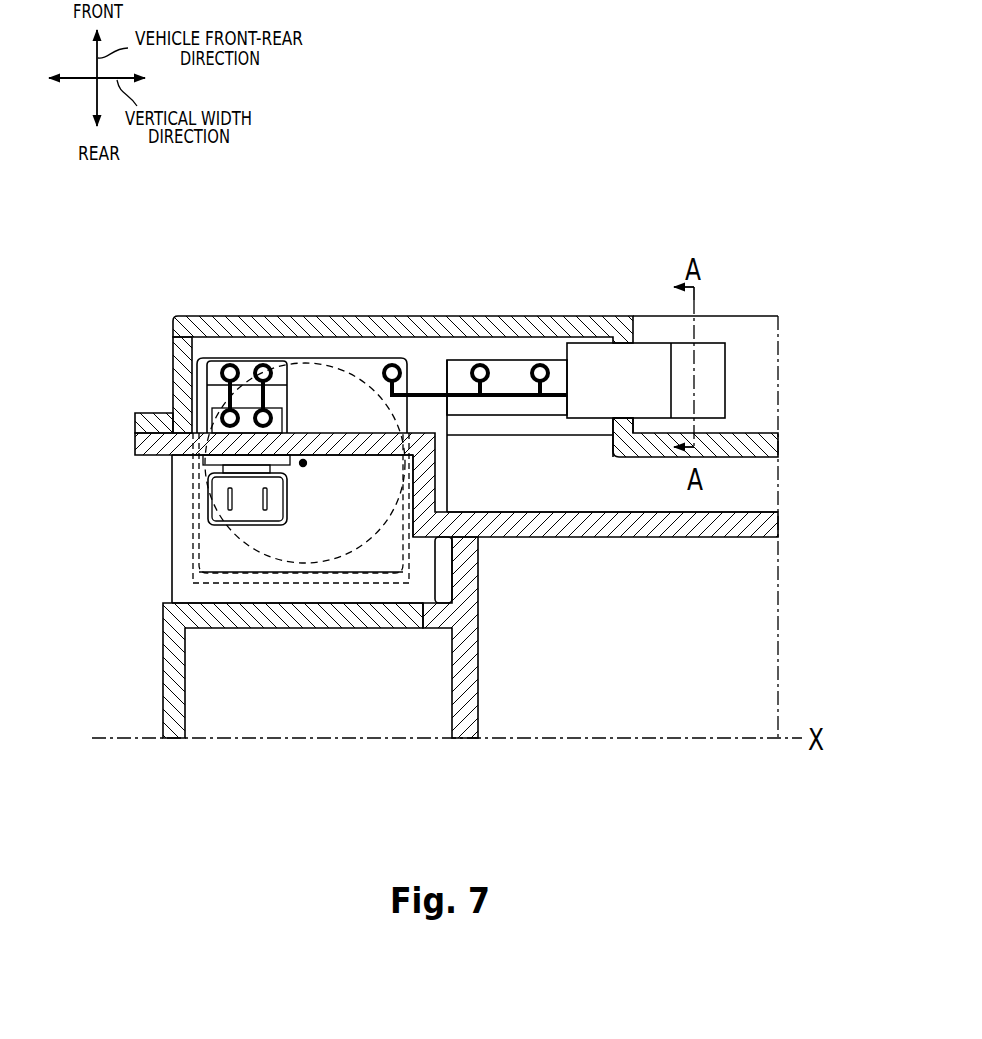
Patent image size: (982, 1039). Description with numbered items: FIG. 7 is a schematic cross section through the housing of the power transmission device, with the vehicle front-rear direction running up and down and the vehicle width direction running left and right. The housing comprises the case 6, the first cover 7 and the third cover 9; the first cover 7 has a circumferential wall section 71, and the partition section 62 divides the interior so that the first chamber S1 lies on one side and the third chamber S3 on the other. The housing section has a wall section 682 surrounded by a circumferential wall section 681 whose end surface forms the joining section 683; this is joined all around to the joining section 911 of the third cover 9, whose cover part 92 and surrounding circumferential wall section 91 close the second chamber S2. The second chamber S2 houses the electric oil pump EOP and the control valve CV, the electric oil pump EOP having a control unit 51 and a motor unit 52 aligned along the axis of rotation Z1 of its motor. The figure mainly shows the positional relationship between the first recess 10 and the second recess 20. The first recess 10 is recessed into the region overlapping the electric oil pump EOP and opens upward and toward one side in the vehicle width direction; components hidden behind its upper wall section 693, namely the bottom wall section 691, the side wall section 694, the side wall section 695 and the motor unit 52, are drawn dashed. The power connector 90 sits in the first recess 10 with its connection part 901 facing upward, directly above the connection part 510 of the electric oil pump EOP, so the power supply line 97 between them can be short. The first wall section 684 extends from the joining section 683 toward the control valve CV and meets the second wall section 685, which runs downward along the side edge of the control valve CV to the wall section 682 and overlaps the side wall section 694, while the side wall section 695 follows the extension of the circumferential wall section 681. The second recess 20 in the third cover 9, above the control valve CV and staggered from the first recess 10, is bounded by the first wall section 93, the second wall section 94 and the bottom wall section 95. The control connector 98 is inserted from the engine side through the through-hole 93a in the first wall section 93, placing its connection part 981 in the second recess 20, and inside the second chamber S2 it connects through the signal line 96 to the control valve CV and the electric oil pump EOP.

The case 6 is at (446, 680).
The first cover 7 is at (245, 670).
The third cover 9 is at (347, 318).
The first recess 10 is at (161, 583).
The second recess 20 is at (767, 352).
The control unit 51 is at (375, 360).
The motor unit 52 is at (313, 362).
The partition section 62 is at (465, 582).
The circumferential wall section 71 is at (270, 610).
The power connector 90 is at (157, 497).
The circumferential wall section 91 is at (172, 357).
The cover part 92 is at (453, 328).
The first wall section 93 is at (620, 422).
The through-hole 93a is at (633, 355).
The second wall section 94 is at (733, 448).
The bottom wall section 95 is at (758, 423).
The signal line 96 is at (508, 358).
The power supply line 97 is at (214, 398).
The control connector 98 is at (707, 323).
The connection part 510 is at (208, 358).
The circumferential wall section 681 is at (195, 470).
The wall section 682 is at (722, 536).
The joining section 683 is at (138, 444).
The first wall section 684 is at (353, 456).
The second wall section 685 is at (448, 470).
The bottom wall section 691 is at (357, 593).
The upper wall section 693 is at (308, 566).
The side wall section 694 is at (455, 557).
The side wall section 695 is at (190, 548).
The connection part 901 is at (212, 516).
The joining section 911 is at (140, 418).
The connection part 981 is at (718, 372).
The electric oil pump EOP is at (307, 352).
The control valve CV is at (548, 362).
The first chamber S1 is at (540, 714).
The second chamber S2 is at (440, 374).
The third chamber S3 is at (238, 671).
The axis of rotation Z1 is at (303, 466).